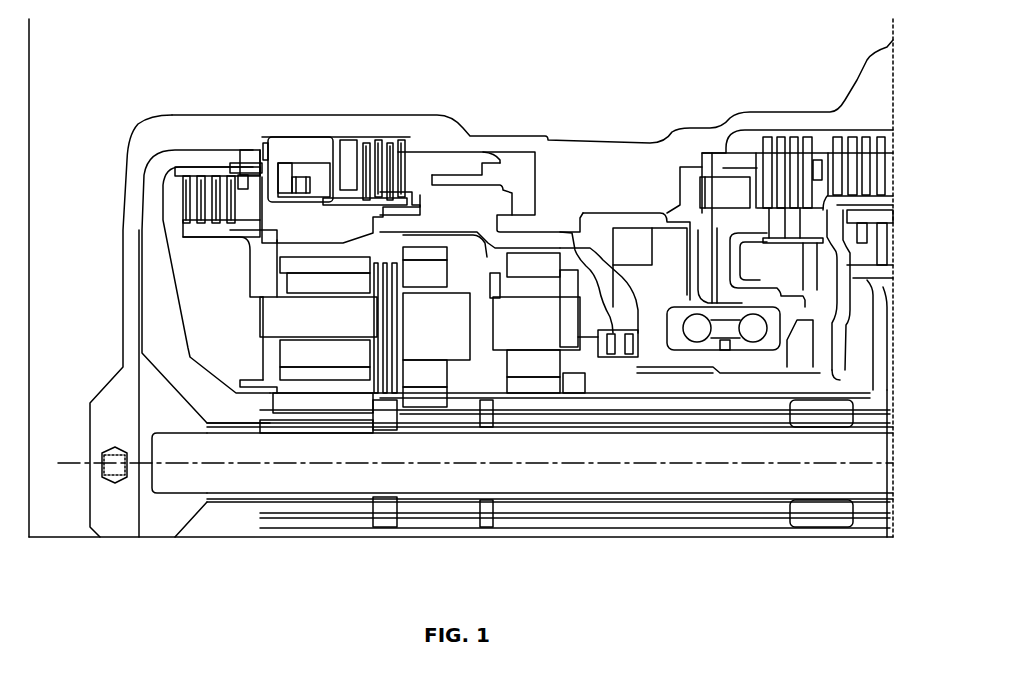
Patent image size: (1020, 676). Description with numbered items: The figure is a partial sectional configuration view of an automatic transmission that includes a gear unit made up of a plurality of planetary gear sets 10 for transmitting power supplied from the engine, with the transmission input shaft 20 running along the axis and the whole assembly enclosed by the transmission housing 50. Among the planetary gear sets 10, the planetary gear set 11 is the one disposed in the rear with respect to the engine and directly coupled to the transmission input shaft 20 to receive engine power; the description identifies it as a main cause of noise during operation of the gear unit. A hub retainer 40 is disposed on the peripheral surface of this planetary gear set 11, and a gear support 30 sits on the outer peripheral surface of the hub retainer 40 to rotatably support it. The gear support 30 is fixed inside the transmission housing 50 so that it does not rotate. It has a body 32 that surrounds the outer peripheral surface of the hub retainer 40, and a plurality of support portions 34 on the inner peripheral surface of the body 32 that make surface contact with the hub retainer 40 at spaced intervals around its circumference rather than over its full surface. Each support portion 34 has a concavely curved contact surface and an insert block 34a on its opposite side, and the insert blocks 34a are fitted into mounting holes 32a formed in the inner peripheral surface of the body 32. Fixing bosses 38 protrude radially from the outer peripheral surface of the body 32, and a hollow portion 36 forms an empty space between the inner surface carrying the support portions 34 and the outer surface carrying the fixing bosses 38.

The planetary gear sets 10 is at (532, 247).
The planetary gear set 11 is at (277, 251).
The transmission input shaft 20 is at (328, 478).
The gear support 30 is at (291, 130).
The body 32 is at (265, 173).
The mounting holes 32a is at (312, 185).
The support portions 34 is at (380, 178).
The insert block 34a is at (300, 183).
The hollow portion 36 is at (287, 170).
The fixing bosses 38 is at (320, 137).
The hub retainer 40 is at (200, 210).
The transmission housing 50 is at (172, 113).